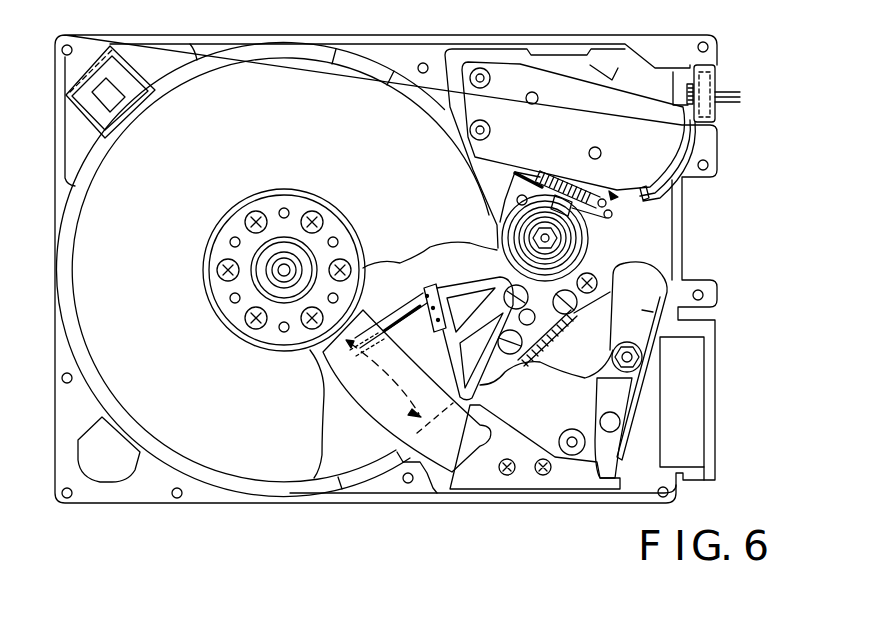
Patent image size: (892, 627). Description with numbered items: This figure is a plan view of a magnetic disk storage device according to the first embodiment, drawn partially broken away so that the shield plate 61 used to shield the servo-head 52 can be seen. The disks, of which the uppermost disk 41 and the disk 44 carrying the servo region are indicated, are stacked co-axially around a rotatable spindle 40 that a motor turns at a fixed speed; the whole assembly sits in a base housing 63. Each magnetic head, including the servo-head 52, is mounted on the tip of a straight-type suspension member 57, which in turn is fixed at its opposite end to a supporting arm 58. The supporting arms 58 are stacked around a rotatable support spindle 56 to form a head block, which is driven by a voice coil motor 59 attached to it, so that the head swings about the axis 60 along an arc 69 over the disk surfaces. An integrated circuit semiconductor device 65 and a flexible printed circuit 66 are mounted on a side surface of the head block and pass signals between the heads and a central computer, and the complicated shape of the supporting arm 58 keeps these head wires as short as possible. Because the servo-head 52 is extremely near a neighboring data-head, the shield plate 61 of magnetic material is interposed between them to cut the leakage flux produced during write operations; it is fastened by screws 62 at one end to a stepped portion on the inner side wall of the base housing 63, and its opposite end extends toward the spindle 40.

The spindle 40 is at (265, 330).
The disk 41 is at (198, 470).
The disk 44 is at (333, 443).
The servo-head 52 is at (354, 368).
The support spindle 56 is at (548, 240).
The suspension member 57 is at (397, 322).
The supporting arm 58 is at (438, 290).
The voice coil motor 59 is at (645, 147).
The axis 60 is at (615, 265).
The shield plate 61 is at (455, 493).
The screws 62 is at (500, 478).
The base housing 63 is at (66, 503).
The integrated circuit semiconductor device 65 is at (628, 392).
The flexible printed circuit 66 is at (707, 320).
The arc 69 is at (396, 414).